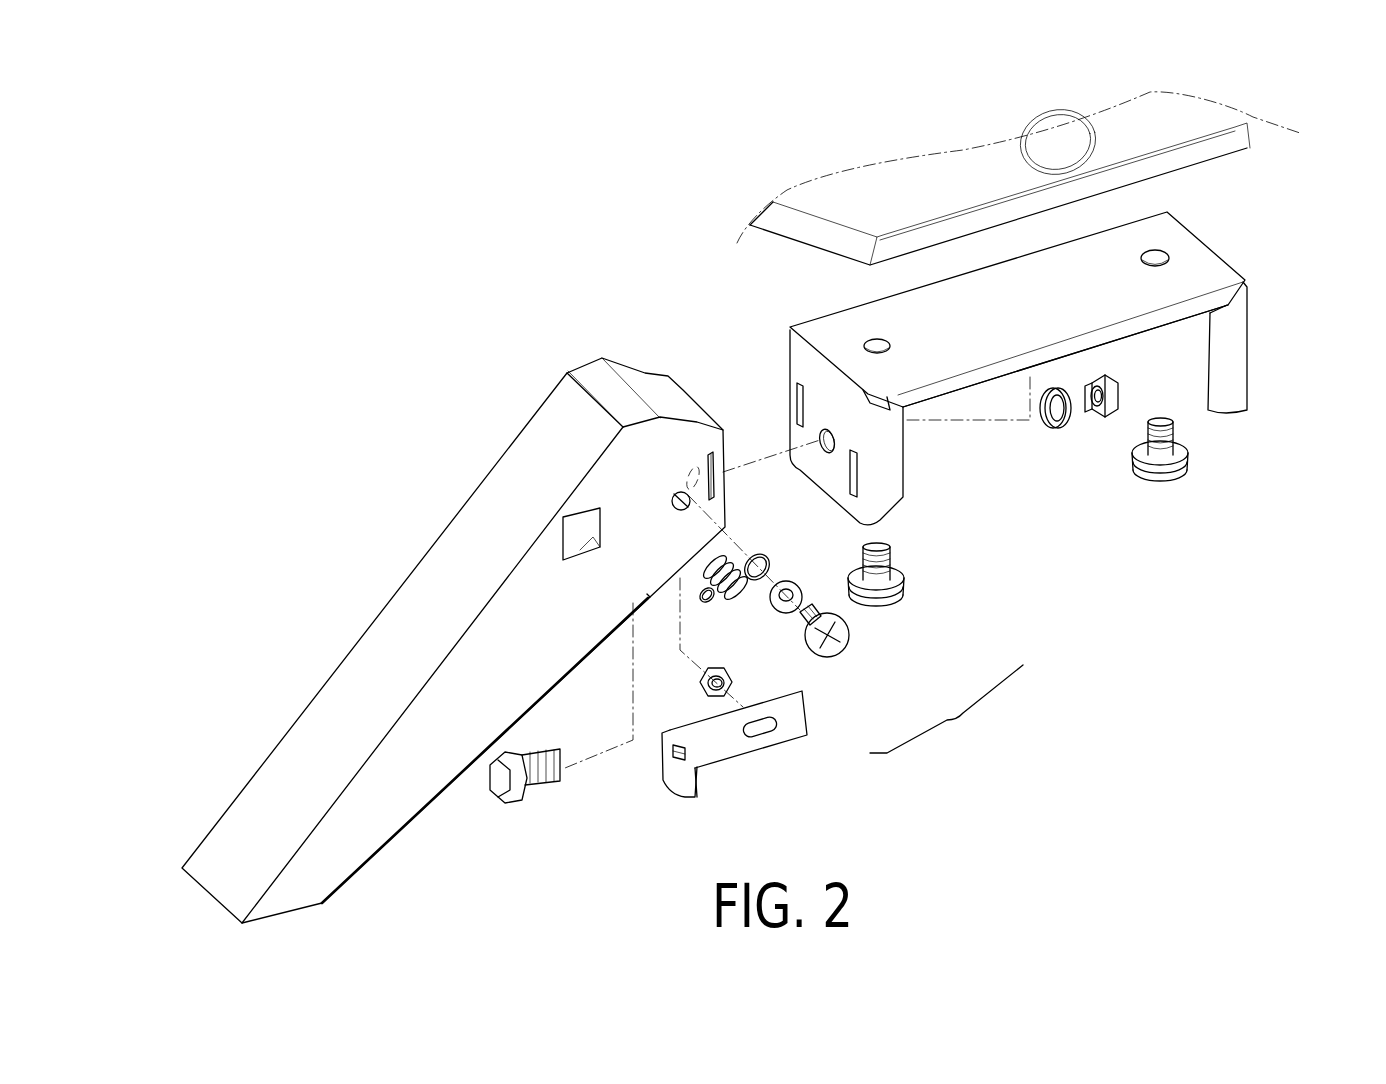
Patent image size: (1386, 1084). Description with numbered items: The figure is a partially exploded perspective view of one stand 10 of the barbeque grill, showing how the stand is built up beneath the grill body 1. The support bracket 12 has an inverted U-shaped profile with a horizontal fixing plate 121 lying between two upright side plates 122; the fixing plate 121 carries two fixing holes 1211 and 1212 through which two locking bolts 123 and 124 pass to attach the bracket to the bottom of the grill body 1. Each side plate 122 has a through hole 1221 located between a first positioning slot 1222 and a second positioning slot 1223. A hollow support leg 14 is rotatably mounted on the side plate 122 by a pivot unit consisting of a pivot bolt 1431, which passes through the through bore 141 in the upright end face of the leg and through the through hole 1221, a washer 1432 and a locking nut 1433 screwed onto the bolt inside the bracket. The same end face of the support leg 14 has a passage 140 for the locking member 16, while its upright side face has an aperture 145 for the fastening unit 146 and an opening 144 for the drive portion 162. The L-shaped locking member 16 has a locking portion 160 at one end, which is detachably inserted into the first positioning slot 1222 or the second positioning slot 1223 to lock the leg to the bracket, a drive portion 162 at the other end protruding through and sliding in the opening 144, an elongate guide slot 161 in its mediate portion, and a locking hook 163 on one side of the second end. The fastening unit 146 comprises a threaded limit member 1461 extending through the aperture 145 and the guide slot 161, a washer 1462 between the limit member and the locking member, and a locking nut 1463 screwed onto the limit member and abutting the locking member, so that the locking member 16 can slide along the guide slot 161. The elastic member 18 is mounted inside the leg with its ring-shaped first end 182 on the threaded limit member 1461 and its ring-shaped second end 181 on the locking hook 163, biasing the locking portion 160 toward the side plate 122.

The grill body 1 is at (907, 188).
The stand 10 is at (618, 305).
The support bracket 12 is at (1122, 338).
The support leg 14 is at (458, 527).
The locking member 16 is at (815, 803).
The elastic member 18 is at (739, 548).
The fixing plate 121 is at (1200, 277).
The side plate 122 is at (800, 360).
The locking bolt 123 is at (903, 583).
The locking bolt 124 is at (1172, 483).
The passage 140 is at (712, 465).
The through bore 141 is at (690, 478).
The opening 144 is at (563, 541).
The aperture 145 is at (680, 504).
The fastening unit 146 is at (946, 712).
The locking portion 160 is at (803, 715).
The guide slot 161 is at (760, 733).
The drive portion 162 is at (678, 787).
The locking hook 163 is at (690, 747).
The second end 181 is at (717, 603).
The first end 182 is at (763, 553).
The fixing hole 1211 is at (870, 342).
The fixing hole 1212 is at (1170, 253).
The through hole 1221 is at (833, 438).
The first positioning slot 1222 is at (860, 480).
The second positioning slot 1223 is at (807, 407).
The pivot bolt 1431 is at (513, 802).
The washer 1432 is at (1058, 430).
The locking nut 1433 is at (1113, 410).
The threaded limit member 1461 is at (847, 630).
The washer 1462 is at (778, 620).
The locking nut 1463 is at (730, 680).